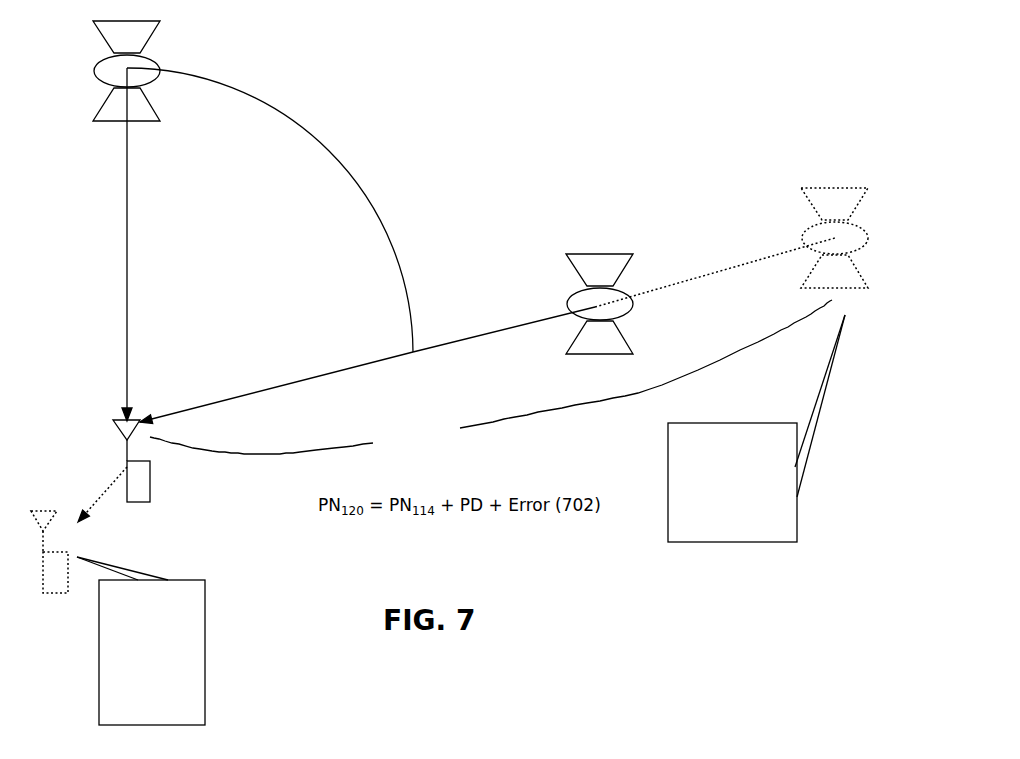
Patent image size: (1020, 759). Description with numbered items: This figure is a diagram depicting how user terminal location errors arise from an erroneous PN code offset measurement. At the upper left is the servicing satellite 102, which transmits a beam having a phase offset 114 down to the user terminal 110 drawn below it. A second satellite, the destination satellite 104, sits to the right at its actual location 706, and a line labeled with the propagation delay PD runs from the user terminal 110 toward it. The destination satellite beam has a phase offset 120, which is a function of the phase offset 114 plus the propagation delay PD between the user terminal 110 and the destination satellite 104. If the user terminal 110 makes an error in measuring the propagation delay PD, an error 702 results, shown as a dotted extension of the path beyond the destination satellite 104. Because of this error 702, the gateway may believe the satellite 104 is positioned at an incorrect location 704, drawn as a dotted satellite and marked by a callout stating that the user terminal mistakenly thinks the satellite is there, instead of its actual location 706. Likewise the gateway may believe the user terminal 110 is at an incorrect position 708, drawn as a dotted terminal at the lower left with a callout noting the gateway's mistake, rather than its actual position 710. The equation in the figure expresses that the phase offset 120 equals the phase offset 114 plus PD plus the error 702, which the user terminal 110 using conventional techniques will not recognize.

The servicing satellite 102 is at (153, 32).
The destination satellite 104 is at (567, 262).
The user terminal 110 is at (150, 472).
The phase offset PN114 114 is at (276, 384).
The phase offset PN120 120 is at (491, 378).
The error 702 is at (633, 288).
The incorrect location 704 is at (860, 288).
The actual location 706 is at (540, 340).
The incorrect position 708 is at (46, 594).
The actual position 710 is at (160, 517).